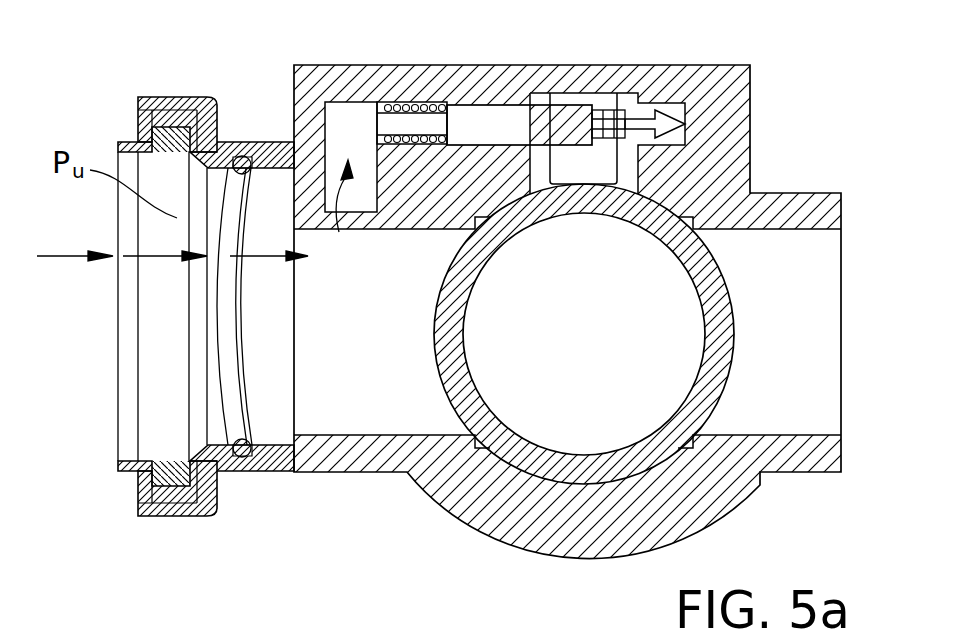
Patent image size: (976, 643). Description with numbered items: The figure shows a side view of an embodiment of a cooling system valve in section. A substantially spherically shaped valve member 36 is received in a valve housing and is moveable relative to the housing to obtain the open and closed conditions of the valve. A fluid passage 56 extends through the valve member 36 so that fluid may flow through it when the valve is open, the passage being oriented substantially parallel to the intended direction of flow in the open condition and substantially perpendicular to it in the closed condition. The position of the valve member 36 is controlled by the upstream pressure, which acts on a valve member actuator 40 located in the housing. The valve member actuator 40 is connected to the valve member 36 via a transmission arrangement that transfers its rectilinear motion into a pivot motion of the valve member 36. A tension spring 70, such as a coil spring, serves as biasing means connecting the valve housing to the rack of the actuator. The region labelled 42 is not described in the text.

The valve member 36 is at (733, 307).
The valve member actuator 40 is at (506, 128).
The pressure chamber 42 is at (353, 127).
The fluid passage 56 is at (592, 348).
The tension spring 70 is at (417, 106).